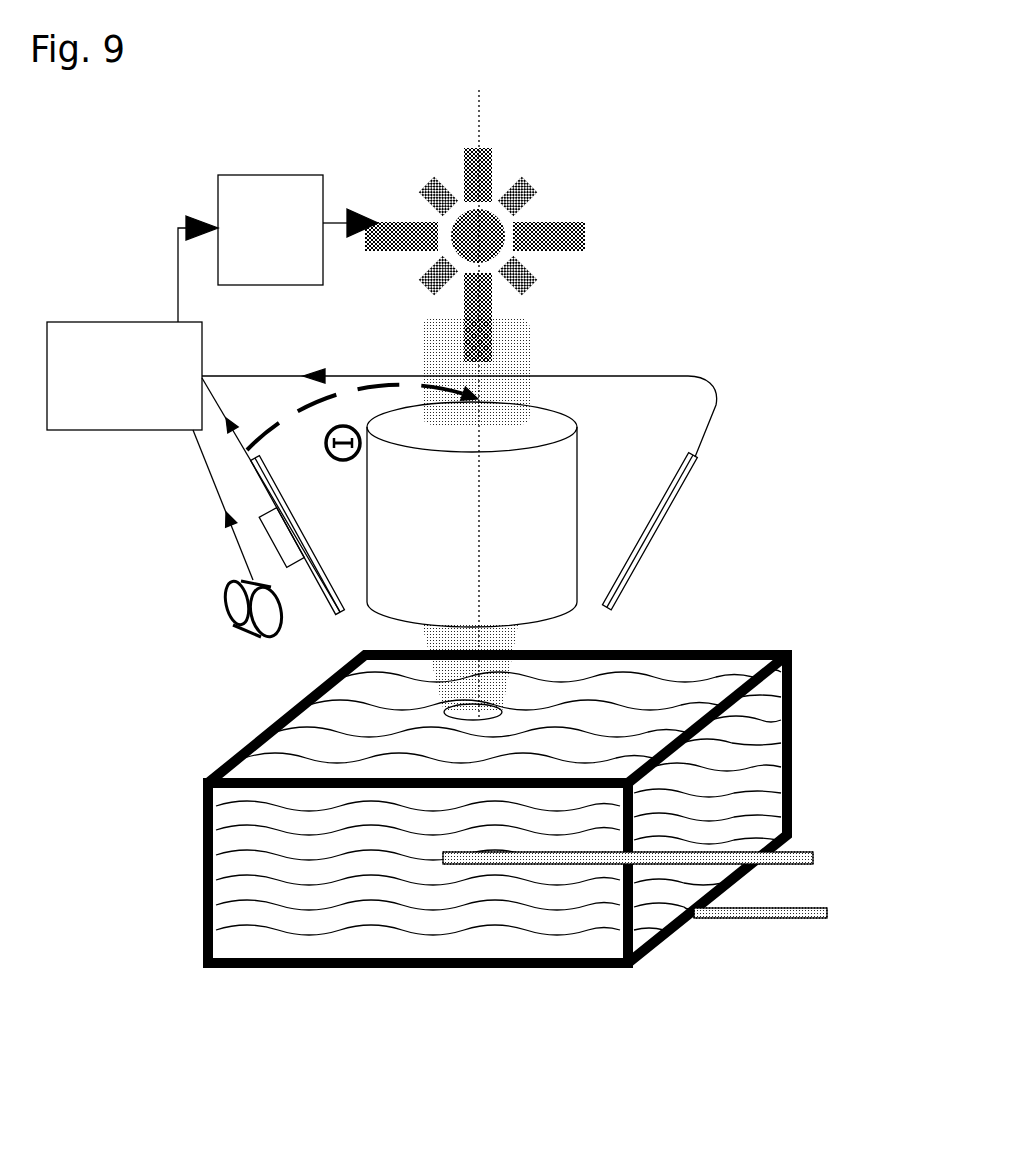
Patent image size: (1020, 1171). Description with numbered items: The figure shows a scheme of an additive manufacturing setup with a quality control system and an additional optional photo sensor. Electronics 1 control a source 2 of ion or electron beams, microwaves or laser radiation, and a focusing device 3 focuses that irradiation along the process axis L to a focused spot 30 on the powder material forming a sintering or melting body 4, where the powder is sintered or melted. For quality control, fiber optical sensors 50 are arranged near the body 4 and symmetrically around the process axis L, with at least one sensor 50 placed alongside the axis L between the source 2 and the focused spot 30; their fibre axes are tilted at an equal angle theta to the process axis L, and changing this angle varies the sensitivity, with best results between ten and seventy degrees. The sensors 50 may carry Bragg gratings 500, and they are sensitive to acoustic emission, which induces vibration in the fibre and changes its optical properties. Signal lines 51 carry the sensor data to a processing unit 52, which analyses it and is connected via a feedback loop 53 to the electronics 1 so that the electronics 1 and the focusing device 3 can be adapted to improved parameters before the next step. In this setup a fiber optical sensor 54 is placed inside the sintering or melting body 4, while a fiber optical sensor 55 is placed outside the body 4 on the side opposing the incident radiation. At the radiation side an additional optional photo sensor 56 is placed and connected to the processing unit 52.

The laser electronics 1 is at (298, 230).
The laser source 2 is at (586, 240).
The laser focusing device 3 is at (503, 602).
The sintering or melting body 4 is at (750, 763).
The irradiation focused spot 30 is at (440, 712).
The fiber optical sensor 50 is at (290, 565).
The signal lines 51 is at (240, 440).
The processing unit 52 is at (382, 467).
The feedback loop 53 is at (178, 275).
The fiber optical sensor 54 is at (710, 850).
The fiber optical sensor 55 is at (800, 915).
The photo sensor 56 is at (225, 610).
The Bragg gratings 500 is at (270, 548).
The process axis L is at (479, 135).